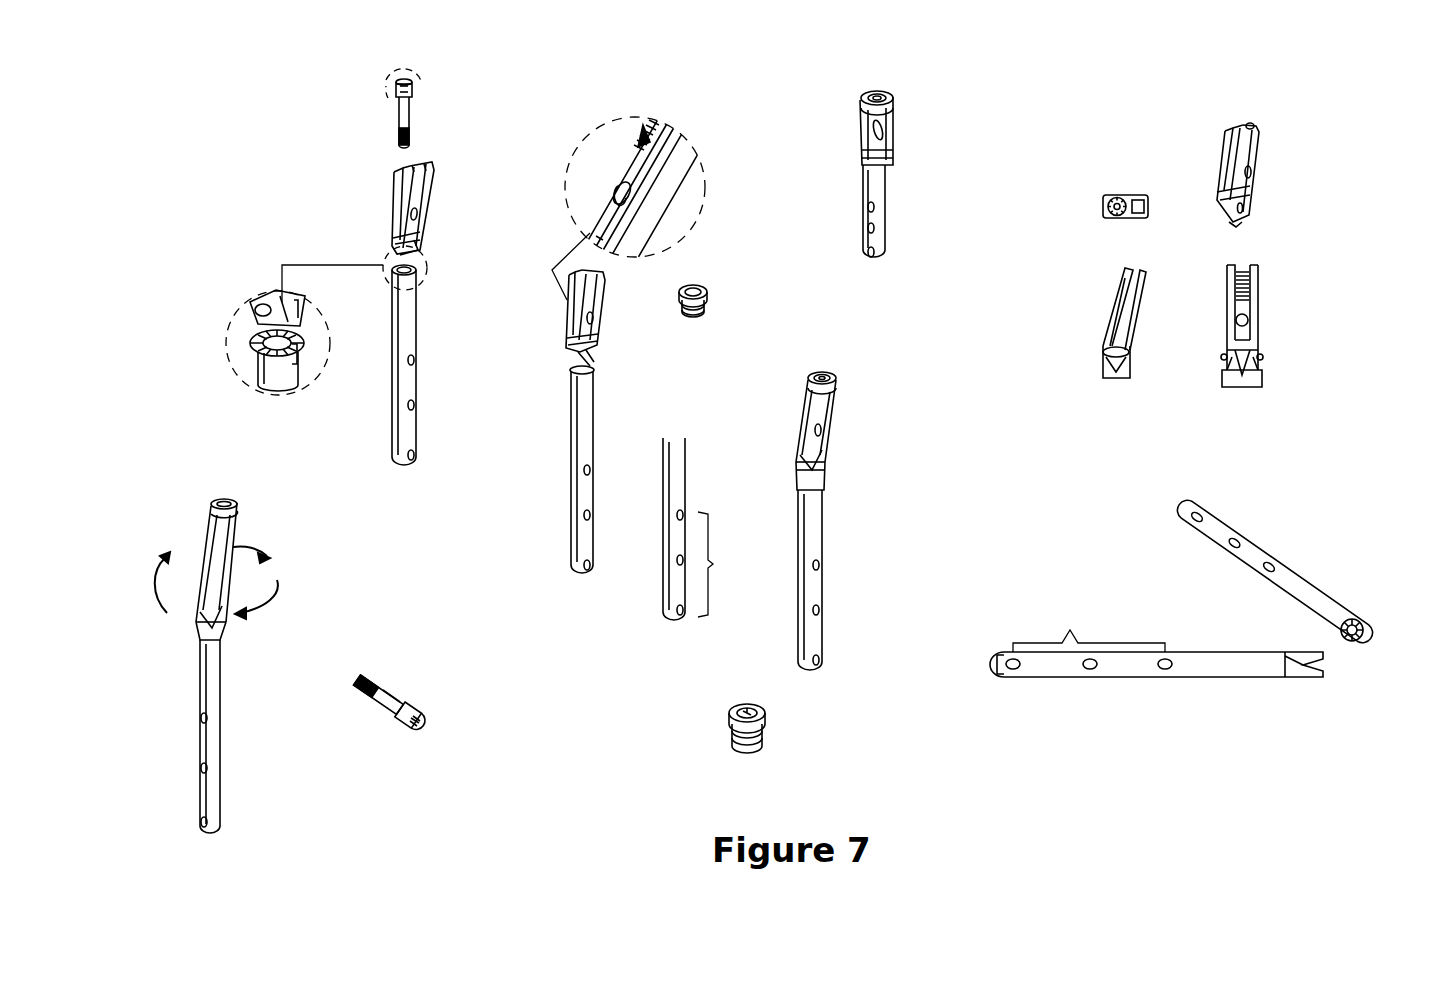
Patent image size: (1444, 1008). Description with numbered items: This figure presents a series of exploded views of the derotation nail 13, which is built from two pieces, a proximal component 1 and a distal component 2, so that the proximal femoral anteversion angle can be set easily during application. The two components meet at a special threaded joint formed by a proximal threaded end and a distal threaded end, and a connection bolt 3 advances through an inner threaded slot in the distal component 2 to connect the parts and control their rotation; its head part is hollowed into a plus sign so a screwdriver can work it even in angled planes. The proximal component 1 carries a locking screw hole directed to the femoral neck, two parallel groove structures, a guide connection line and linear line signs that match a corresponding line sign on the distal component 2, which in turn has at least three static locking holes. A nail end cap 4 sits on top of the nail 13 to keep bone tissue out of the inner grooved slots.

The proximal component 1 is at (420, 226).
The distal component 2 is at (410, 388).
The connection bolt 3 is at (617, 192).
The nail end cap 4 is at (700, 316).
The nail 13 is at (200, 665).